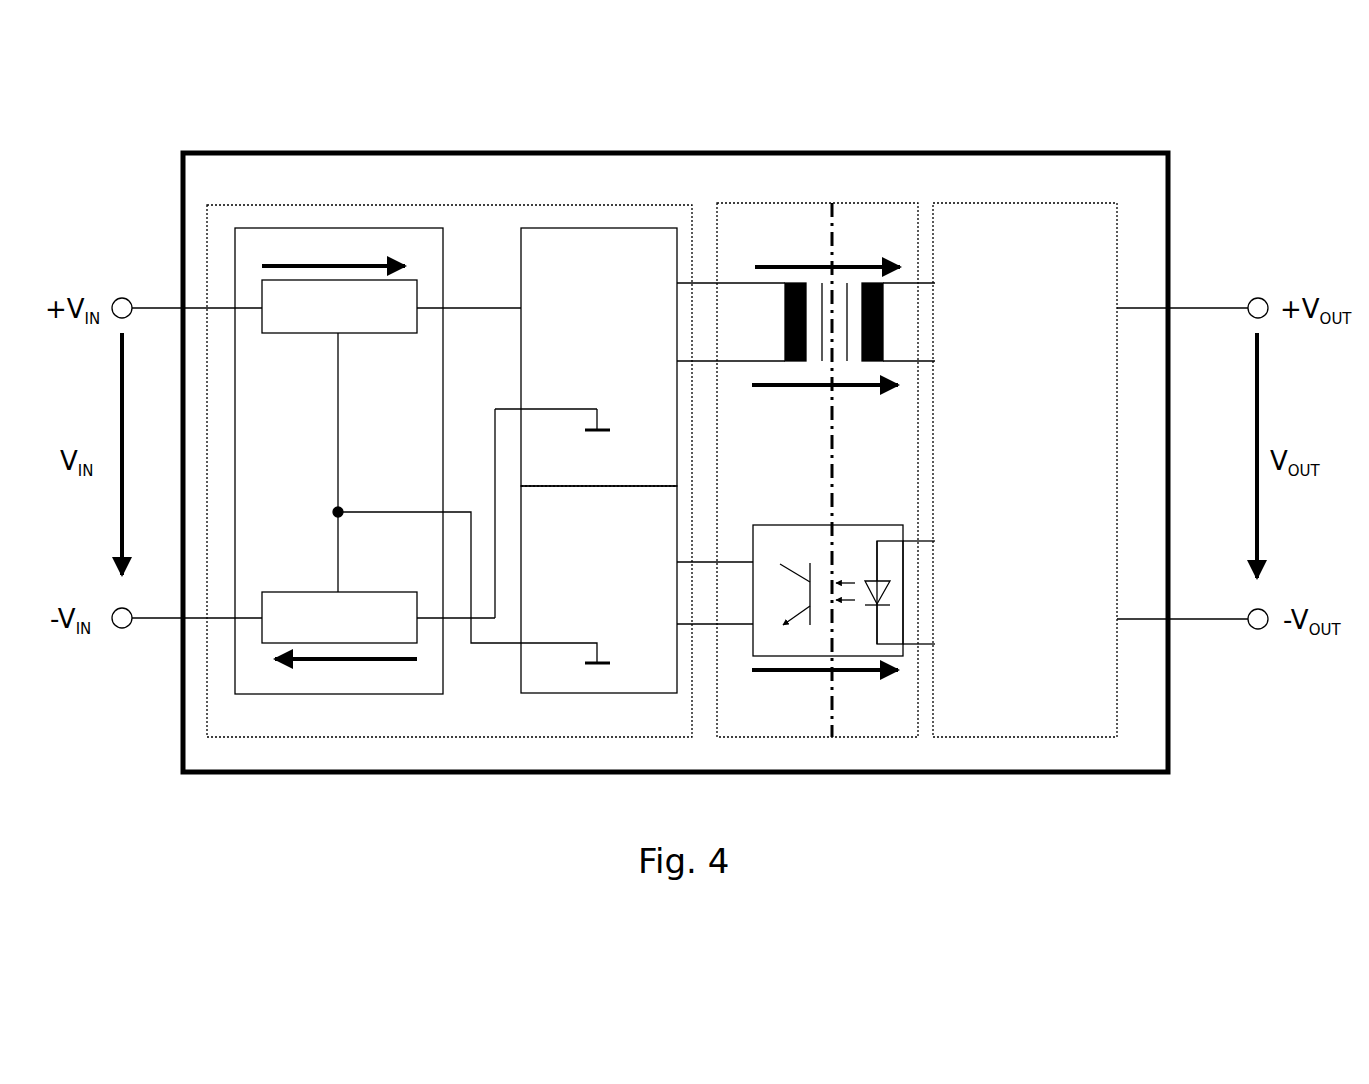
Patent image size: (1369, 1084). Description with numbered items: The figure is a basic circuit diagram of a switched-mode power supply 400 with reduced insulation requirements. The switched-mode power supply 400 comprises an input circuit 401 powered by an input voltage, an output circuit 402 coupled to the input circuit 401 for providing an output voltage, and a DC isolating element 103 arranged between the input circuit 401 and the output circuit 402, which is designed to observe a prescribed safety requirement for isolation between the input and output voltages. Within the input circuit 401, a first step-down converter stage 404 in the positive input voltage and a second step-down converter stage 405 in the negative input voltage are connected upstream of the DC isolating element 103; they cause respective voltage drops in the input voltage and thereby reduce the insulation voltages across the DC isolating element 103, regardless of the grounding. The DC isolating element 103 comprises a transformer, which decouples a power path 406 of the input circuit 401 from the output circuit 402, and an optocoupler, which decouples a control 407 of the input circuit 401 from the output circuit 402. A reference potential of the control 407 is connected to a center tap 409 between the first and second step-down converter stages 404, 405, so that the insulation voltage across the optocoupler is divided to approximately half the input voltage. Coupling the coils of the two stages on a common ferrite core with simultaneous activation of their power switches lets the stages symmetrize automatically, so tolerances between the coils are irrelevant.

The switched-mode power supply 400 is at (675, 444).
The input circuit 401 is at (449, 454).
The output circuit 402 is at (1025, 470).
The DC isolating element 103 is at (806, 453).
The first step-down converter stage 404 is at (339, 306).
The second step-down converter stage 405 is at (339, 617).
The power path 406 is at (599, 357).
The control 407 is at (599, 589).
The center tap 409 is at (366, 498).